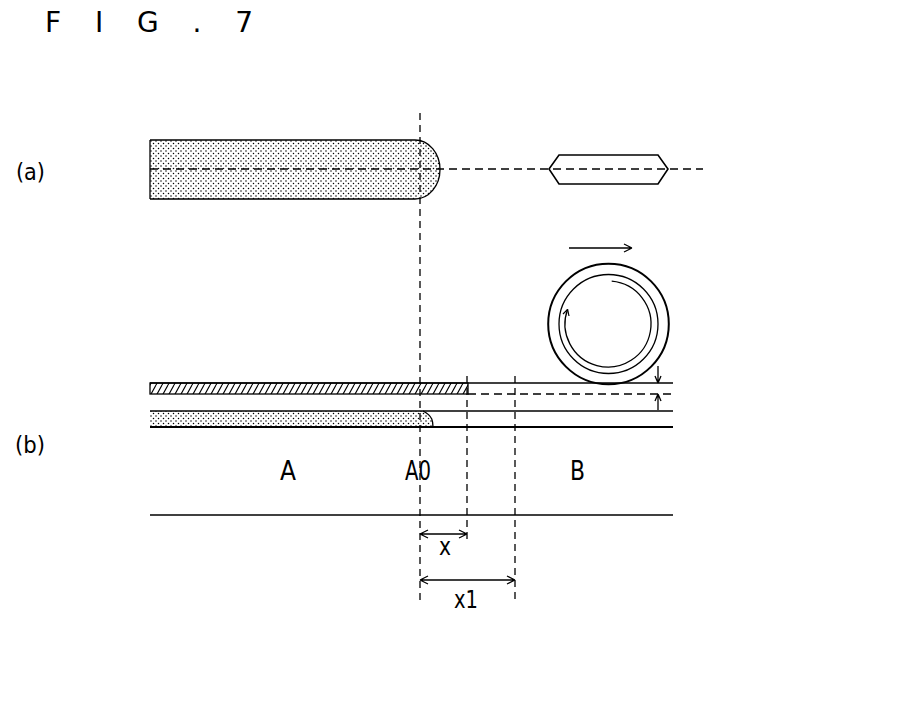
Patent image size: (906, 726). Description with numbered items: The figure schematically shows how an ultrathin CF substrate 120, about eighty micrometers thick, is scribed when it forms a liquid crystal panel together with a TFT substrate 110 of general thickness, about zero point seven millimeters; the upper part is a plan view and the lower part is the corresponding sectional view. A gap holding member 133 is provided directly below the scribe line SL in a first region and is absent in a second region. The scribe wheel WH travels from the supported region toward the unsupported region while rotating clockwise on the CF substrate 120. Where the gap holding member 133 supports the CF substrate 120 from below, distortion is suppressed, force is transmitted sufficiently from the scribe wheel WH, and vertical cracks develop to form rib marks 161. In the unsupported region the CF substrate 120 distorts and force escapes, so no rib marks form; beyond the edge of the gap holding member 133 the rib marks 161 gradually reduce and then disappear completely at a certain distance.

The gap holding member 133 is at (167, 188).
The rib marks 161 is at (152, 394).
The CF substrate 120 is at (168, 405).
The TFT substrate 110 is at (167, 480).
The scribe wheel WH is at (618, 164).
The scribe line SL is at (440, 169).